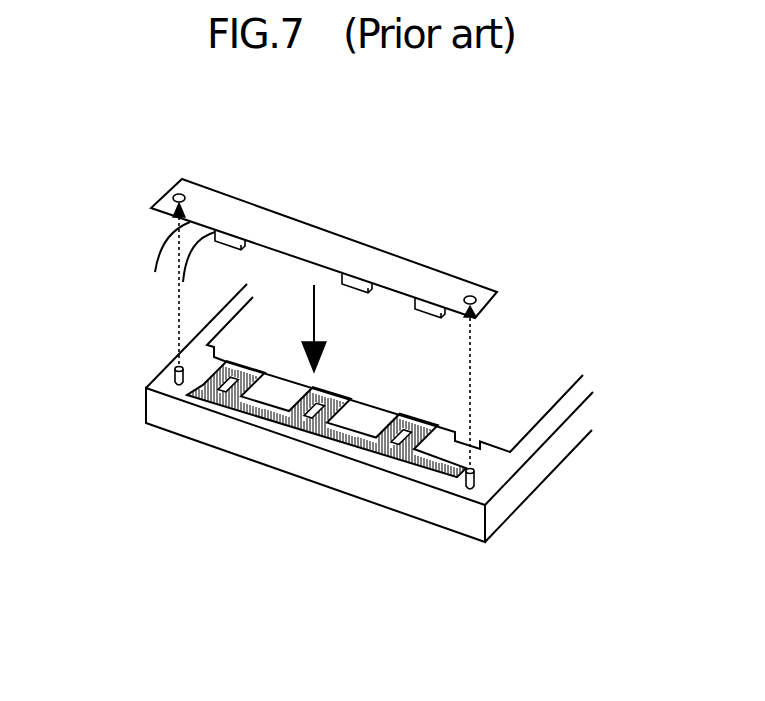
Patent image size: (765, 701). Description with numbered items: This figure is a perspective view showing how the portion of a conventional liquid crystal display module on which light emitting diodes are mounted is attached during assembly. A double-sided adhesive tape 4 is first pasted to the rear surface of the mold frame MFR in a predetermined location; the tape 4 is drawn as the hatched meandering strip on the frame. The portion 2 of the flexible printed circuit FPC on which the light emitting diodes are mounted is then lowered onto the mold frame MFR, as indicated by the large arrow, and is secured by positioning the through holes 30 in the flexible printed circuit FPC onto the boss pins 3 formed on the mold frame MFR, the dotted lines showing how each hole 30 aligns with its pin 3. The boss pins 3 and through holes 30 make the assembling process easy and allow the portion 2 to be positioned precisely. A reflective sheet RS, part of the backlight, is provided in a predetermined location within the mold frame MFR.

The portion of the flexible printed circuit on which light emitting diodes are mount 2 is at (375, 256).
The through holes 30 is at (180, 193).
The boss pins 3 is at (170, 373).
The double-sided adhesive tape 4 is at (392, 452).
The flexible printed circuit FPC is at (167, 262).
The reflective sheet RS is at (512, 388).
The mold frame MFR is at (417, 438).